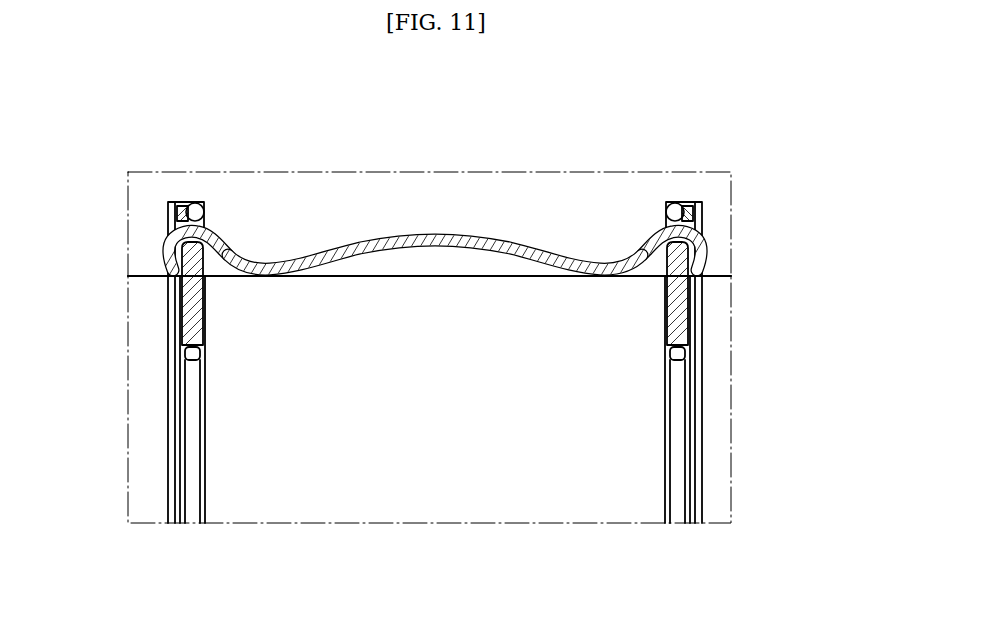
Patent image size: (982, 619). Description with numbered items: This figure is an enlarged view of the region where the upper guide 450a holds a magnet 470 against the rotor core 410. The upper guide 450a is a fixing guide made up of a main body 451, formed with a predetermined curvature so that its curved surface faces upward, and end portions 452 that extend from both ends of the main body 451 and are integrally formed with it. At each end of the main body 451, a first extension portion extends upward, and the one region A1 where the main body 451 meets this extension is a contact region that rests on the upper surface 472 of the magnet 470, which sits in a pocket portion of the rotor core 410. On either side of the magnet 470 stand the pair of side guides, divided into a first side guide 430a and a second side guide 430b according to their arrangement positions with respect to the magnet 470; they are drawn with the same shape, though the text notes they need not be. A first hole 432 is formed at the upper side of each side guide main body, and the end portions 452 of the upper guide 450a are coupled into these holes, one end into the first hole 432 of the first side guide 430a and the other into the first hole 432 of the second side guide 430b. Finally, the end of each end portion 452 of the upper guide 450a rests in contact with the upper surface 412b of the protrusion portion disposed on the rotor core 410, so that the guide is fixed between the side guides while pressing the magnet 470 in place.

The rotor core 410 is at (713, 384).
The upper surface of the protrusion portion 412b is at (718, 276).
The first side guide 430a is at (156, 488).
The second side guide 430b is at (716, 486).
The first hole 432 is at (204, 226).
The upper guide 450a is at (380, 185).
The main body 451 is at (435, 193).
The end portion 452 is at (168, 232).
The magnet 470 is at (522, 467).
The upper surface of the magnet 472 is at (425, 255).
The contact region A1 is at (248, 278).